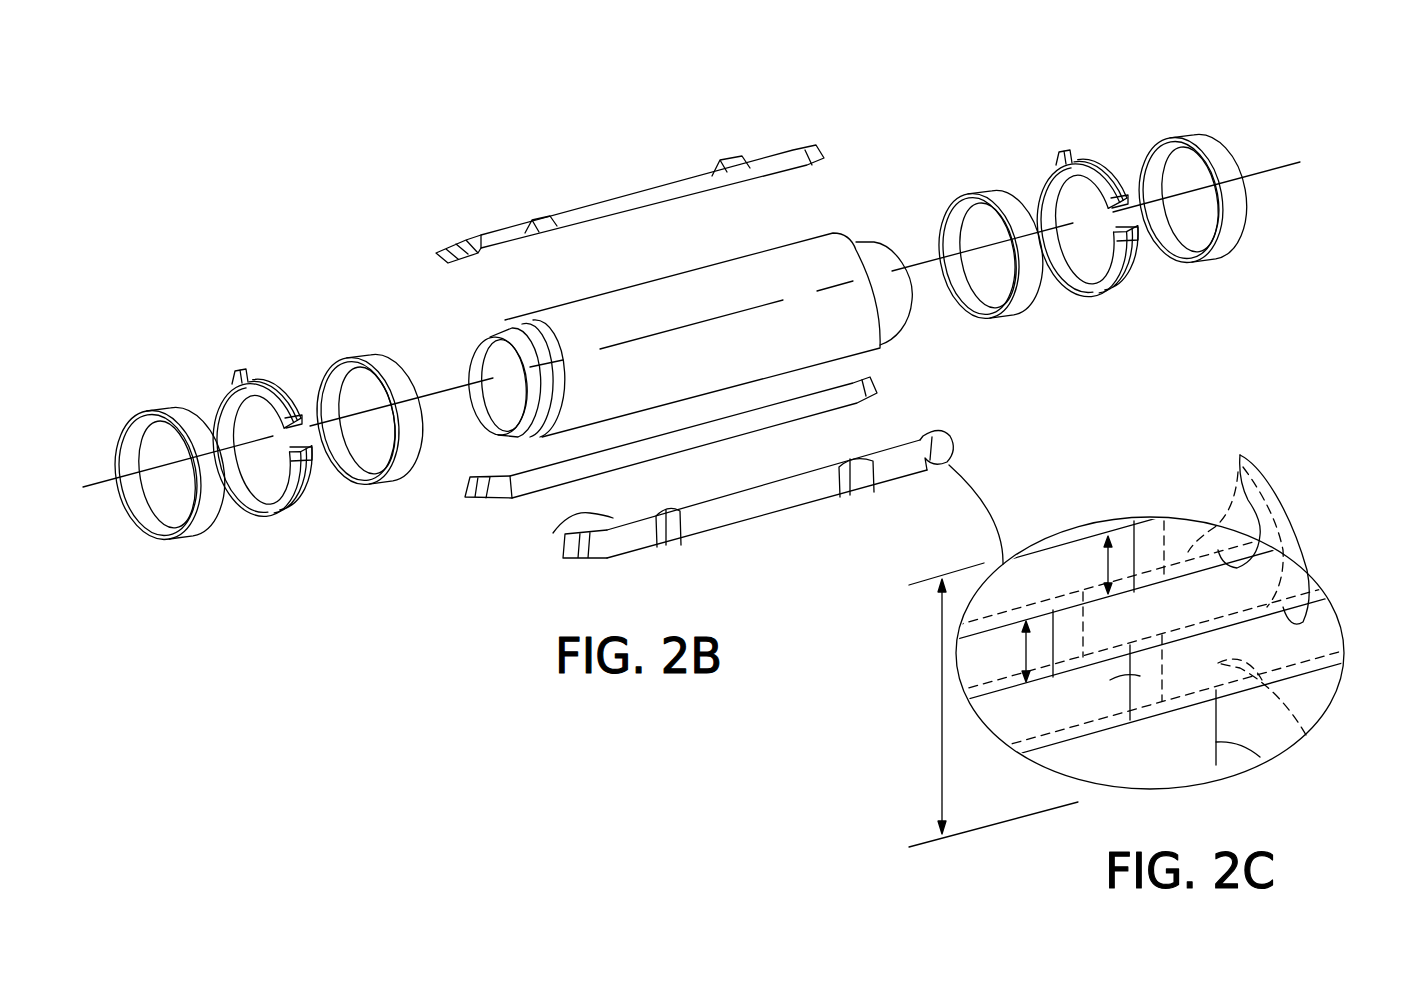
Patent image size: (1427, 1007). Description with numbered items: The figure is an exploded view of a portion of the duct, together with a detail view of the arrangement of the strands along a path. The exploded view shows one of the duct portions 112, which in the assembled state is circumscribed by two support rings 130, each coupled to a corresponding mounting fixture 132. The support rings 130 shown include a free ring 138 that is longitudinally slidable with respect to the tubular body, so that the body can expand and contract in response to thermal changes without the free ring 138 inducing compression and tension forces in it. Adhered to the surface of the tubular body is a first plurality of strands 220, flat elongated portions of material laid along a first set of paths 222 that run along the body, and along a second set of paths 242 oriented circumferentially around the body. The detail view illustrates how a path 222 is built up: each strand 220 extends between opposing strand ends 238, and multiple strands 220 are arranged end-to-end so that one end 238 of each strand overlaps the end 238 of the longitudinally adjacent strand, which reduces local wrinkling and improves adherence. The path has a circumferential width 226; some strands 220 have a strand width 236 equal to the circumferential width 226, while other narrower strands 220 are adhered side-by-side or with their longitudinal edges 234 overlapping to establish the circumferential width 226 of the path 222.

In FIG. 2B, the duct portion 112 is at (780, 252).
In FIG. 2B, the support ring 130 is at (654, 290).
In FIG. 2B, the free ring 138 is at (262, 378).
In FIG. 2B, the mounting fixture 132 is at (236, 381).
In FIG. 2B, the strand 220 is at (660, 314).
In FIG. 2B, the path of the first set of paths 222 is at (620, 198).
In FIG. 2B, the path of the second set of paths 242 is at (152, 416).
In FIG. 2C, the circumferential width 226 is at (940, 728).
In FIG. 2C, the longitudinal edge 234 is at (1248, 524).
In FIG. 2C, the strand width 236 is at (1108, 565).
In FIG. 2C, the strand end 238 is at (1110, 680).